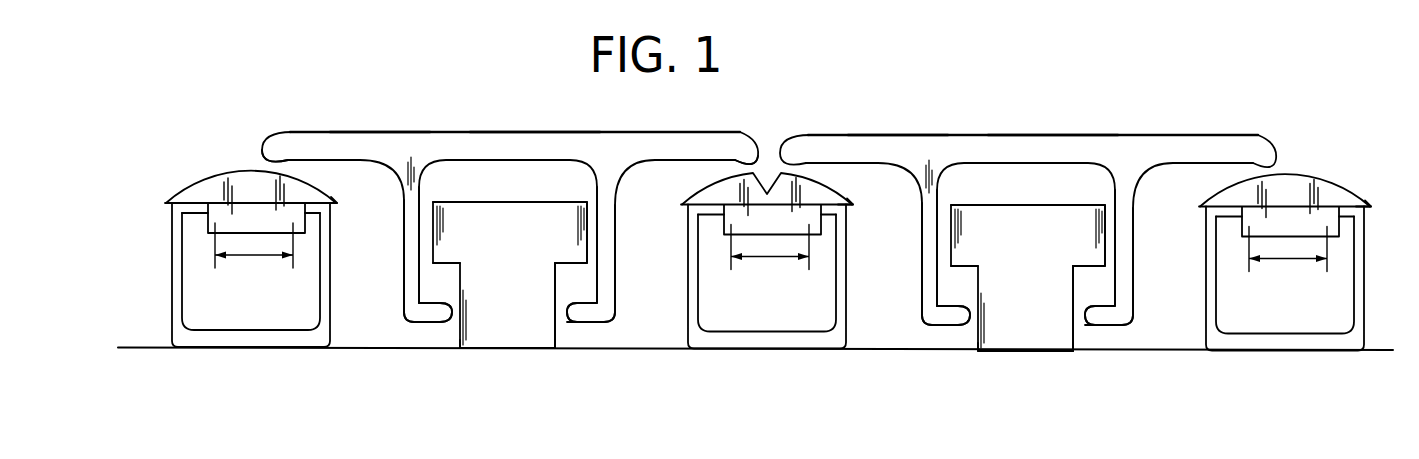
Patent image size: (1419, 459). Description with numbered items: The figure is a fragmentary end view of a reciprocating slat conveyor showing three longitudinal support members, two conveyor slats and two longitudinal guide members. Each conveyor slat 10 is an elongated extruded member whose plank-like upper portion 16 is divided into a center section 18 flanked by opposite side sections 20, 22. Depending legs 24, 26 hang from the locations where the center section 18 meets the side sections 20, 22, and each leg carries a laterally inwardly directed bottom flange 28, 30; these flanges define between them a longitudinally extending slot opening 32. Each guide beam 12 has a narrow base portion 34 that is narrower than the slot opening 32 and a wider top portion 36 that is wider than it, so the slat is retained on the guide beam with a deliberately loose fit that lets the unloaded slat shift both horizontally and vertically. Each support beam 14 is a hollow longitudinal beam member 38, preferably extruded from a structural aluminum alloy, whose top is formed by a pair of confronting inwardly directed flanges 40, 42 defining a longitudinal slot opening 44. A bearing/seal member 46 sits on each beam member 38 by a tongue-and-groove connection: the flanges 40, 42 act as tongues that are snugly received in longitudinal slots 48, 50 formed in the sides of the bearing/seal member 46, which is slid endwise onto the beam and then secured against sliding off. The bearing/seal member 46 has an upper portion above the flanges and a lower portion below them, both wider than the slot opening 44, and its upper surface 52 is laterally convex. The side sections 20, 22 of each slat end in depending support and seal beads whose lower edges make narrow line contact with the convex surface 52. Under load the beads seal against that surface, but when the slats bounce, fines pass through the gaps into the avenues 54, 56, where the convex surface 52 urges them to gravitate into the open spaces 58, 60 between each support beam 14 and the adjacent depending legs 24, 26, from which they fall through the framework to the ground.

The conveyor slat 10 is at (463, 106).
The longitudinal guide beam 12 is at (474, 342).
The longitudinal support beam 14 is at (257, 343).
The plank-like upper portion 16 is at (388, 132).
The center section 18 is at (527, 140).
The side section 20 is at (285, 129).
The side section 22 is at (703, 147).
The depending leg 24 is at (405, 252).
The depending leg 26 is at (614, 293).
The bottom flange 28 is at (432, 315).
The bottom flange 30 is at (586, 318).
The slot opening 32 is at (556, 330).
The base portion 34 is at (508, 342).
The top portion 36 is at (493, 212).
The hollow longitudinal beam member 38 is at (290, 343).
The flange 40 is at (208, 202).
The flange 42 is at (336, 202).
The longitudinal slot opening 44 is at (250, 257).
The bearing/seal member 46 is at (251, 178).
The longitudinal slot 48 is at (196, 213).
The longitudinal slot 50 is at (316, 216).
The upper surface 52 is at (186, 180).
The avenue 54 is at (702, 170).
The avenue 56 is at (293, 160).
The open space 58 is at (380, 222).
The open space 60 is at (637, 227).